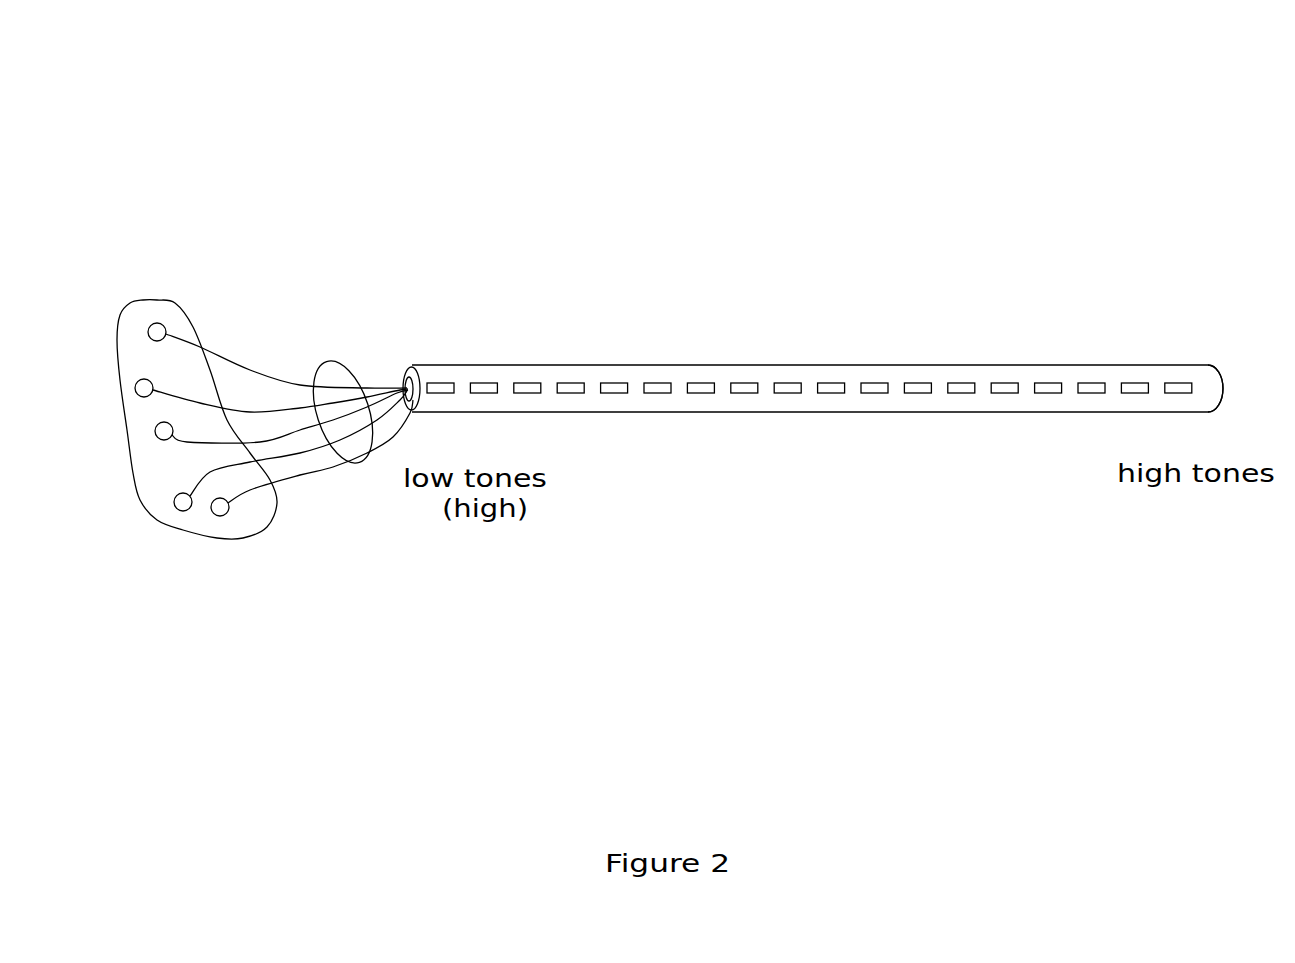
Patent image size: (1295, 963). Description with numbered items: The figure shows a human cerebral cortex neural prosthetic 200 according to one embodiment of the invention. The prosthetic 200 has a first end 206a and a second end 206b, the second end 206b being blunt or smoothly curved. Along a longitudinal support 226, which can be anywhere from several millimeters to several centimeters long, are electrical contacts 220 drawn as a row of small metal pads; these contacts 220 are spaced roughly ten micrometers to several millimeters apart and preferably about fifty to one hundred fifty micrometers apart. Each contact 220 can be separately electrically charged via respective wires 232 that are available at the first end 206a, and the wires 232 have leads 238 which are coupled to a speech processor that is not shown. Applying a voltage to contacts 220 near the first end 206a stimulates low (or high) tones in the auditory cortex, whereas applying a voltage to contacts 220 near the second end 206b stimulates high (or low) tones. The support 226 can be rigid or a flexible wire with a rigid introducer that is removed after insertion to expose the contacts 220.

The human cerebral cortex neural prosthetic 200 is at (960, 148).
The first end 206a is at (410, 367).
The second end 206b is at (1213, 365).
The electrical contacts 220 is at (750, 385).
The longitudinal support 226 is at (810, 365).
The wires 232 is at (323, 362).
The leads 238 is at (168, 300).